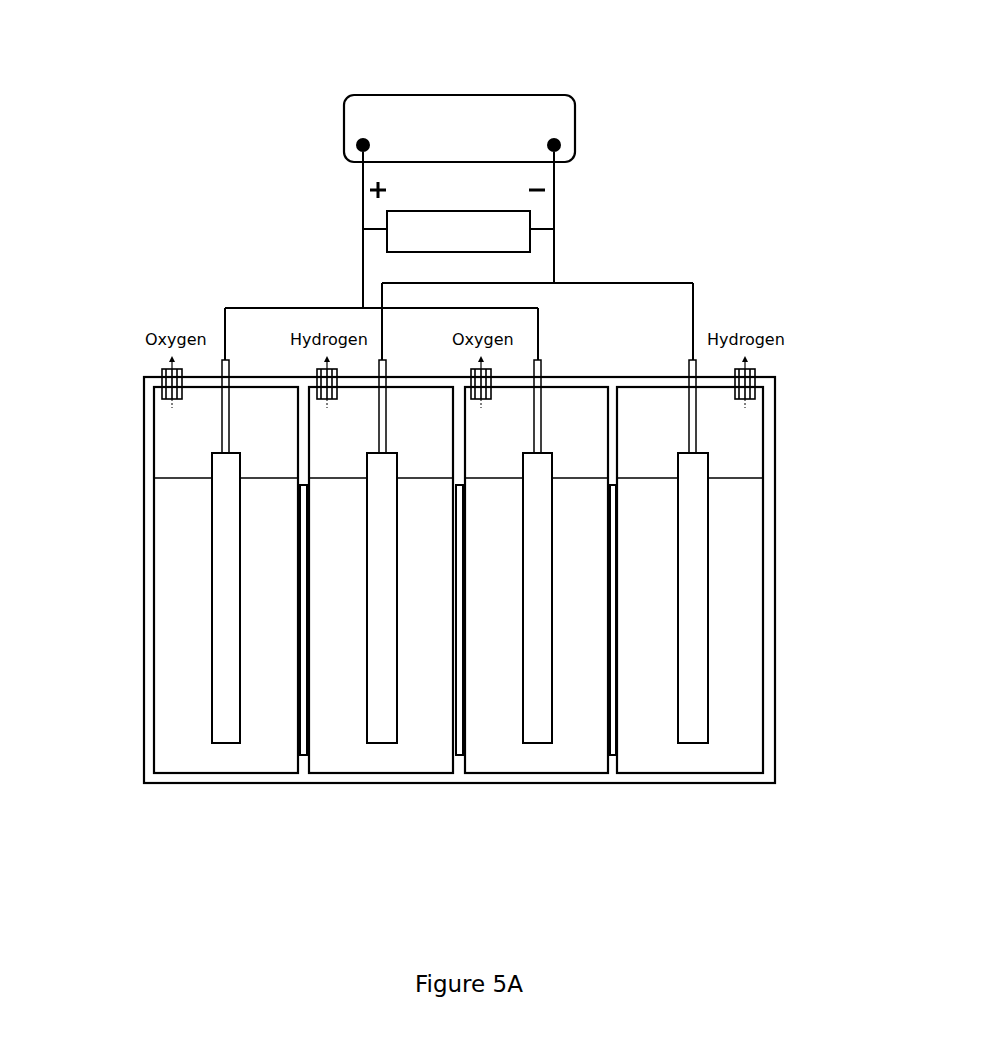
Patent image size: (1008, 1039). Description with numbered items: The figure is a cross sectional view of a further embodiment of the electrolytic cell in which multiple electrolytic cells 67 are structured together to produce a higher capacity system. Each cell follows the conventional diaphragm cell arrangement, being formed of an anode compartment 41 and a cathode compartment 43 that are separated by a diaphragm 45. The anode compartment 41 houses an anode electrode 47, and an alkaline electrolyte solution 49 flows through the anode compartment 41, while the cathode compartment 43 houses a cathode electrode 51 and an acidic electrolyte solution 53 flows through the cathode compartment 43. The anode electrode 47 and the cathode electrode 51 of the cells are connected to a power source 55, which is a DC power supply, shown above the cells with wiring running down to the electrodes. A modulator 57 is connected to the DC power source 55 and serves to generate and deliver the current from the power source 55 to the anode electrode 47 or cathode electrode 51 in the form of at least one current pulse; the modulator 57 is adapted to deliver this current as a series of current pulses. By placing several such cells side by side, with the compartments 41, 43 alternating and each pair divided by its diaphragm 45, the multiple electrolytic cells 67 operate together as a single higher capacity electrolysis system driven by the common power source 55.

The anode compartment 41 is at (145, 692).
The cathode compartment 43 is at (775, 698).
The diaphragm 45 is at (302, 735).
The anode electrode 47 is at (225, 543).
The alkaline electrolyte solution 49 is at (192, 616).
The cathode electrode 51 is at (695, 572).
The acidic electrolyte solution 53 is at (720, 637).
The power source 55 is at (450, 108).
The modulator 57 is at (402, 220).
The multiple electrolytic cells 67 is at (131, 214).